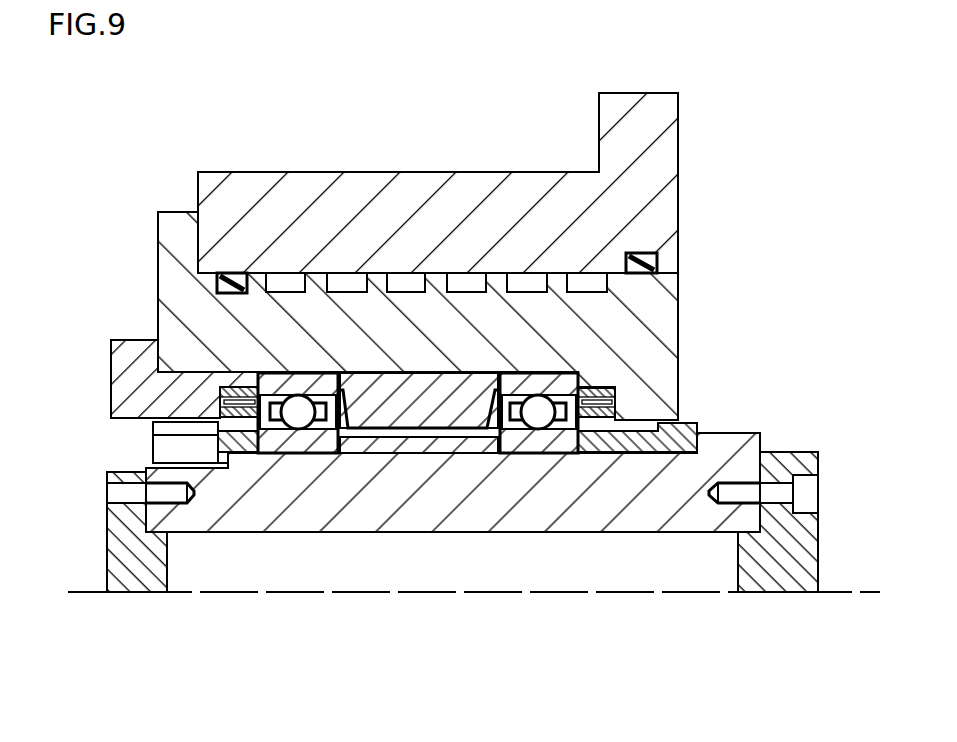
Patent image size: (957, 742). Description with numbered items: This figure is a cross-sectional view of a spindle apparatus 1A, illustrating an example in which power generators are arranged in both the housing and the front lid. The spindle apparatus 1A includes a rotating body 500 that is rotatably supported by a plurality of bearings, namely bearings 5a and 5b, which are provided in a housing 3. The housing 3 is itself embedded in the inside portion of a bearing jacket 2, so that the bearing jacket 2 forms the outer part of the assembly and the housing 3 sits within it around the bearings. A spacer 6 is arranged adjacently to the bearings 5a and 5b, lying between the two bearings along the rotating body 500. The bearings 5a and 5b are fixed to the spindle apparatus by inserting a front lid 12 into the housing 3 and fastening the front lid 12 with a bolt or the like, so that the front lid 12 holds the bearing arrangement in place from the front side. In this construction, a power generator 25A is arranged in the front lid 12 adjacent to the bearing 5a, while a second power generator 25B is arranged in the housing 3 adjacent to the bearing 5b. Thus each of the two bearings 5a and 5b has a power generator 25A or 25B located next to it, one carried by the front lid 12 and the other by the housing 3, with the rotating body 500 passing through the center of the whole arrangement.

The spindle apparatus 1A is at (132, 91).
The bearing jacket 2 is at (633, 115).
The housing 3 is at (182, 238).
The bearing 5a is at (290, 372).
The bearing 5b is at (535, 372).
The spacer 6 is at (413, 372).
The front lid 12 is at (135, 360).
The power generator 25A is at (242, 420).
The power generator 25B is at (602, 420).
The rotating body 500 is at (730, 433).